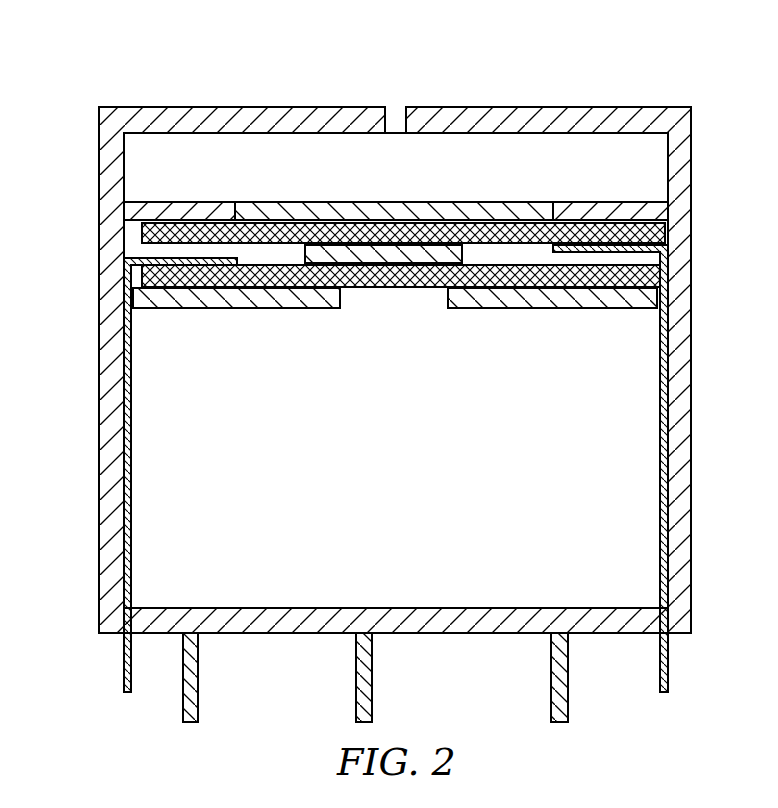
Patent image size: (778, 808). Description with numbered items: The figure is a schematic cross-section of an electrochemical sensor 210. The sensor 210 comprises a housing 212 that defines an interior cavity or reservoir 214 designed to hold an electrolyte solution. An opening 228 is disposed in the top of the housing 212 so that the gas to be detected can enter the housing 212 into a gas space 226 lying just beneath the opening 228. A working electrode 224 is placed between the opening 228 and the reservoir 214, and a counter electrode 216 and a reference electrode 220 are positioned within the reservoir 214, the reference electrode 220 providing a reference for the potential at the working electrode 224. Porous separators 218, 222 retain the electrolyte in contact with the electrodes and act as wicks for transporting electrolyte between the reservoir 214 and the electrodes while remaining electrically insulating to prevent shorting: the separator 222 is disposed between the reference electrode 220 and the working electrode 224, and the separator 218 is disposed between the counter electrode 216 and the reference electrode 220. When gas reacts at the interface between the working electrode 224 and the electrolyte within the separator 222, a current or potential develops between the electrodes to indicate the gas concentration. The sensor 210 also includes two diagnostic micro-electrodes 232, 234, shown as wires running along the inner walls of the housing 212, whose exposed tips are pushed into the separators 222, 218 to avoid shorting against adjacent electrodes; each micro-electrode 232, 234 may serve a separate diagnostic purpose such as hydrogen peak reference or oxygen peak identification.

The electrochemical sensor 210 is at (630, 42).
The housing 212 is at (100, 608).
The reservoir 214 is at (402, 511).
The counter electrode 216 is at (253, 308).
The separator 218 is at (142, 273).
The reference electrode 220 is at (418, 263).
The separator 222 is at (142, 232).
The working electrode 224 is at (272, 202).
The gas space 226 is at (402, 178).
The opening 228 is at (397, 122).
The diagnostic micro-electrode 232 is at (131, 433).
The diagnostic micro-electrode 234 is at (660, 433).